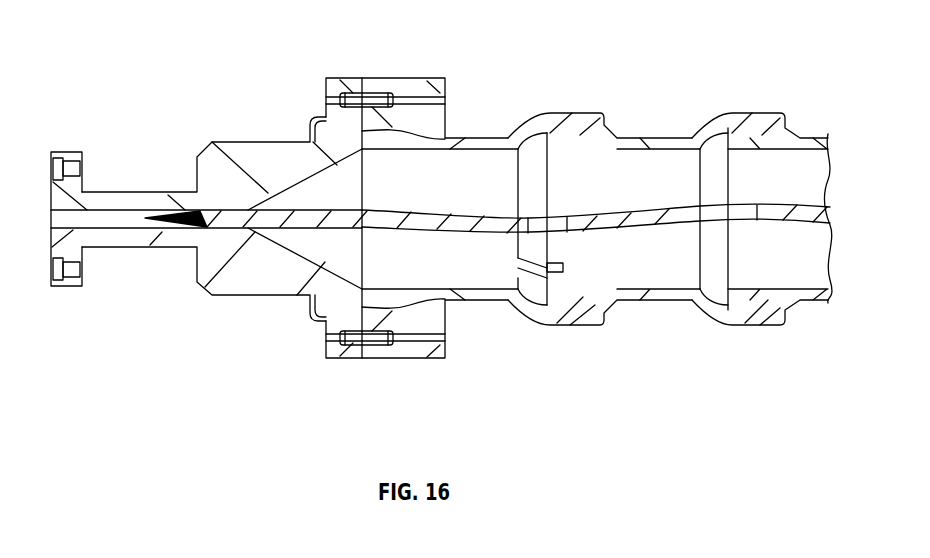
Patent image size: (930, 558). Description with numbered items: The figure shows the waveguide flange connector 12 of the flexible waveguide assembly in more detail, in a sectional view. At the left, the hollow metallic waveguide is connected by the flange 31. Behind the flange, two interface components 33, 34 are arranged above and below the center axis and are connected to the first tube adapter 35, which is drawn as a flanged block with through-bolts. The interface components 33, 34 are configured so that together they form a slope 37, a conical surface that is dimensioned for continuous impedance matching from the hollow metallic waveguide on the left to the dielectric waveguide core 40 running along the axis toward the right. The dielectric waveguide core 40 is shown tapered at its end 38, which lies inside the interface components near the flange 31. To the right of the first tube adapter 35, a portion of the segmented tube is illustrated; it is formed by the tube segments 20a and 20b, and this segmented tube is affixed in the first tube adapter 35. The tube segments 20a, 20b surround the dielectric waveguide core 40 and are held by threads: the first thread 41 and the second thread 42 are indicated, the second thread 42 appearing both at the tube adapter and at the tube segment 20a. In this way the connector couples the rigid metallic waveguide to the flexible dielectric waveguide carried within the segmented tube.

The waveguide flange connector 12 is at (183, 98).
The flange 31 is at (70, 150).
The interface component 33 is at (258, 140).
The interface component 34 is at (258, 285).
The first tube adapter 35 is at (410, 85).
The slope 37 is at (313, 255).
The tapered end 38 is at (186, 212).
The dielectric waveguide core 40 is at (462, 216).
The first thread 41 is at (552, 240).
The second thread 42 is at (363, 162).
The tube segment 20a is at (573, 318).
The tube segment 20b is at (738, 317).